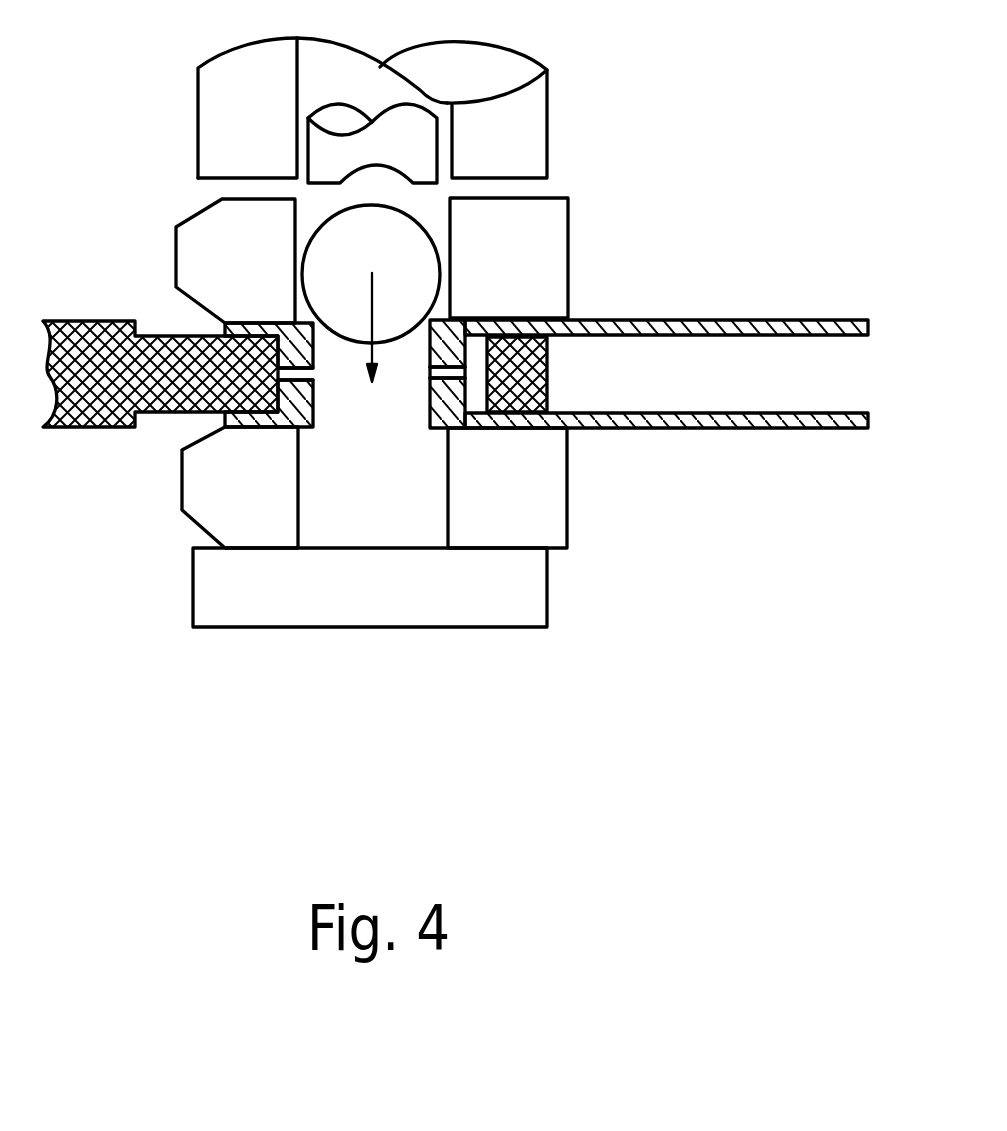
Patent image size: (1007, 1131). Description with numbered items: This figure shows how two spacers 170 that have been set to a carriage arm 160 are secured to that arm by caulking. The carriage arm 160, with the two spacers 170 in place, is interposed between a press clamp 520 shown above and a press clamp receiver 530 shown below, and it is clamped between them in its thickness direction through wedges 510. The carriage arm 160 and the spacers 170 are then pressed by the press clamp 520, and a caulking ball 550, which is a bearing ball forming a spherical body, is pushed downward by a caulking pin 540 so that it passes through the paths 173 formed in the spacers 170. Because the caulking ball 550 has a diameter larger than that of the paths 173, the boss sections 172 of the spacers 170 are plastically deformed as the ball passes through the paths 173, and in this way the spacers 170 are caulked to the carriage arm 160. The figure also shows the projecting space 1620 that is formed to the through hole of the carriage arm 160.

The carriage arm 160 is at (93, 338).
The spacers 170 is at (641, 318).
The boss sections 172 is at (455, 325).
The paths 173 is at (313, 343).
The wedges 510 is at (208, 222).
The press clamp 520 is at (532, 141).
The press clamp receiver 530 is at (522, 593).
The caulking pin 540 is at (325, 153).
The caulking ball 550 is at (335, 297).
The projecting space 1620 is at (467, 400).